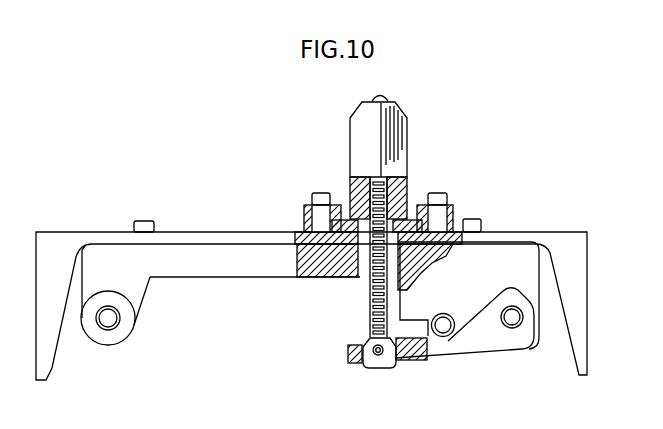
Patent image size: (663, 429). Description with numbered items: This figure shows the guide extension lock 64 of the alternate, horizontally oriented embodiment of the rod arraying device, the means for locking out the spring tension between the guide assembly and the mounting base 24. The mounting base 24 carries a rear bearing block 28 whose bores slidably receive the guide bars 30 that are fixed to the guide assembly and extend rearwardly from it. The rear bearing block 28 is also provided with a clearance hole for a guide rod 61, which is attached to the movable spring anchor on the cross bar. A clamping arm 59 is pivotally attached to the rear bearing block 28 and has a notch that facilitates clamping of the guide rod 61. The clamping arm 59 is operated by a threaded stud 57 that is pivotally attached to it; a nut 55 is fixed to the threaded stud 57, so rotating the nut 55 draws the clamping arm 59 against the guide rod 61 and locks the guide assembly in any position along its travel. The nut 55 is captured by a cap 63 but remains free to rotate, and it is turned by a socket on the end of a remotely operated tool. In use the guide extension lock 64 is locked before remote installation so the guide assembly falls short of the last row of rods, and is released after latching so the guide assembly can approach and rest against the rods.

The mounting base 24 is at (523, 232).
The bearing block 28 is at (513, 274).
The guide bar 30 is at (117, 318).
The nut 55 is at (398, 125).
The threaded stud 57 is at (370, 283).
The clamping arm 59 is at (488, 346).
The guide rod 61 is at (448, 316).
The cap 63 is at (458, 200).
The guide extension lock 64 is at (480, 136).